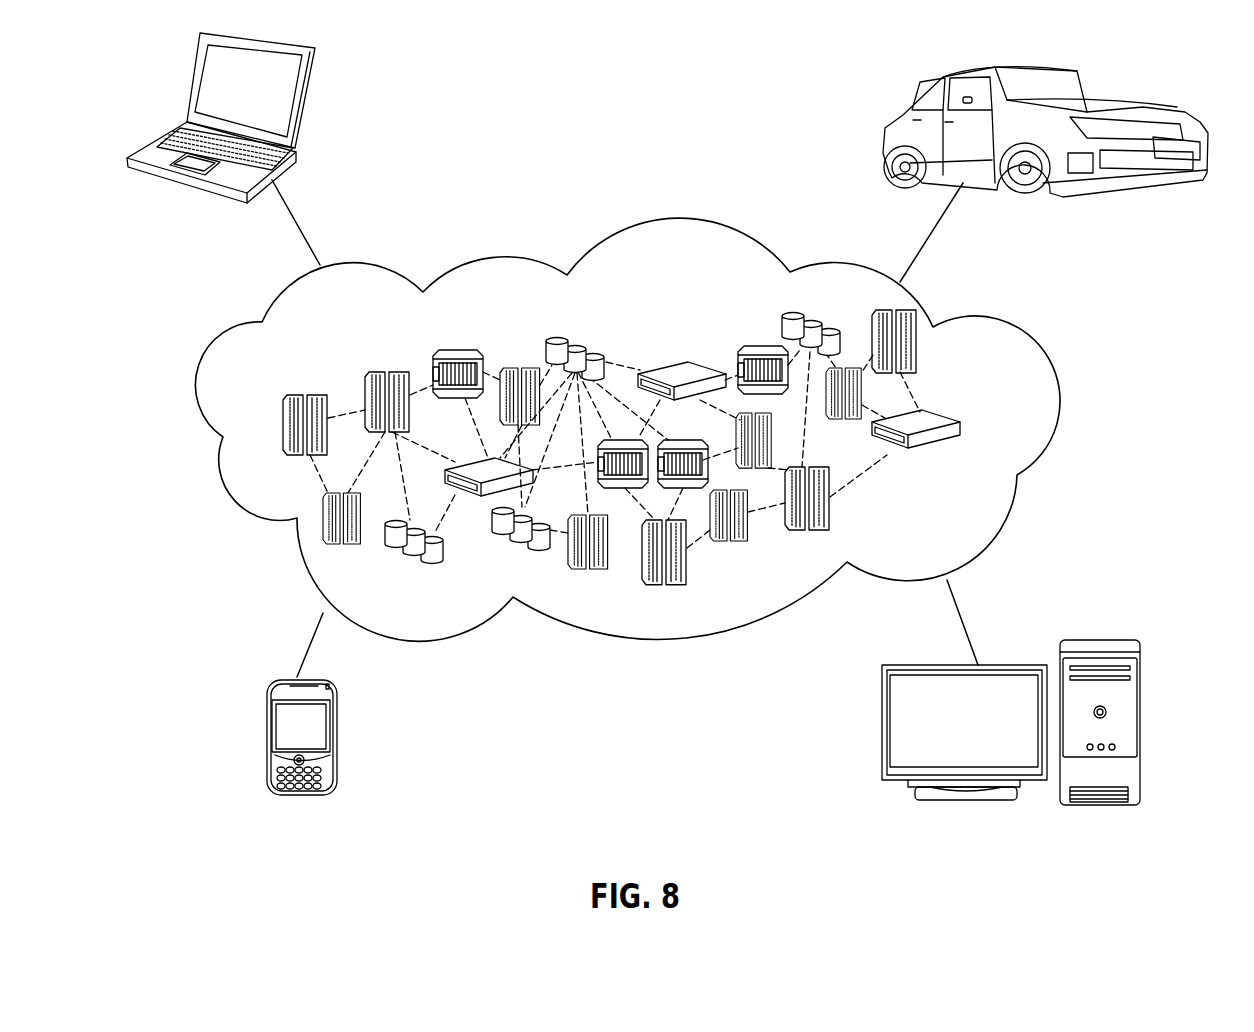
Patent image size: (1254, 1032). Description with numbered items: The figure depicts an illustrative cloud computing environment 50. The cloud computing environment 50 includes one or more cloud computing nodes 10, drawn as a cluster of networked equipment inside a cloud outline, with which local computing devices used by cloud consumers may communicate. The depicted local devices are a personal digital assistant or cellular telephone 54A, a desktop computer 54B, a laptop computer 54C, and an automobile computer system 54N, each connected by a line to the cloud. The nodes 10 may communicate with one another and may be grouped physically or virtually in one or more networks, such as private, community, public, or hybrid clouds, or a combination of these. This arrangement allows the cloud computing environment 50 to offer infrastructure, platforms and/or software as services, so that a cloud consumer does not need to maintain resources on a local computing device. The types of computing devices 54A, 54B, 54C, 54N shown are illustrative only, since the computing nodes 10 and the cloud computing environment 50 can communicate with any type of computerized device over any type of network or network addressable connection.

The cloud computing nodes 10 is at (1000, 427).
The cloud computing environment 50 is at (1020, 340).
The personal digital assistant (PDA) or cellular telephone 54A is at (265, 740).
The desktop computer 54B is at (1105, 638).
The laptop computer 54C is at (307, 106).
The automobile computer system 54N is at (898, 115).